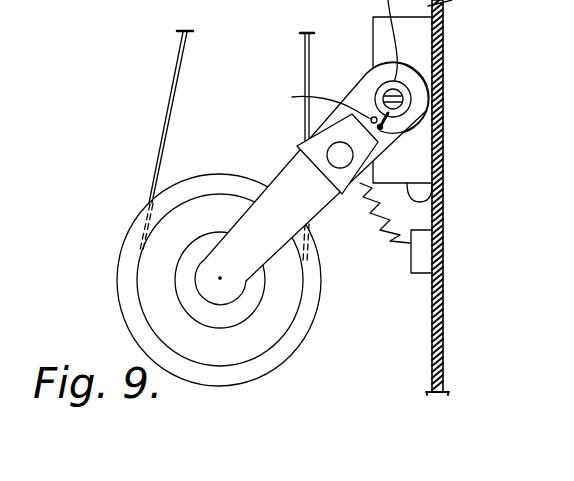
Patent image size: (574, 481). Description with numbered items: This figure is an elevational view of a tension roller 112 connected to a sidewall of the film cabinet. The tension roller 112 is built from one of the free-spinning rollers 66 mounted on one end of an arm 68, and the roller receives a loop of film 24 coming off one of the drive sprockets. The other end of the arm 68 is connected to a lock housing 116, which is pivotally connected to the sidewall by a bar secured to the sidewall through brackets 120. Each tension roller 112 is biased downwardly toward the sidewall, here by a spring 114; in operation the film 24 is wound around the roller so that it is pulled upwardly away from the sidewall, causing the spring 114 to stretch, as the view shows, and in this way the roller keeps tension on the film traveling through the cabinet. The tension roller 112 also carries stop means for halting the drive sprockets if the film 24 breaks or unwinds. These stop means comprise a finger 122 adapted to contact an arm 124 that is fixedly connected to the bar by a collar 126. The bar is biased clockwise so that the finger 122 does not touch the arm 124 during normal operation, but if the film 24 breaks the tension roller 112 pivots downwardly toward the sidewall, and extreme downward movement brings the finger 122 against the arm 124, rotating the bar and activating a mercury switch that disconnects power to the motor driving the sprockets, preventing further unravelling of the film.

The film 24 is at (178, 70).
The free-spinning roller 66 is at (128, 233).
The arm 68 is at (283, 173).
The tension roller 112 is at (124, 158).
The spring 114 is at (393, 237).
The lock housing 116 is at (357, 80).
The bracket 120 is at (440, 194).
The finger 122 is at (322, 61).
The arm 124 is at (436, 105).
The collar 126 is at (409, 88).